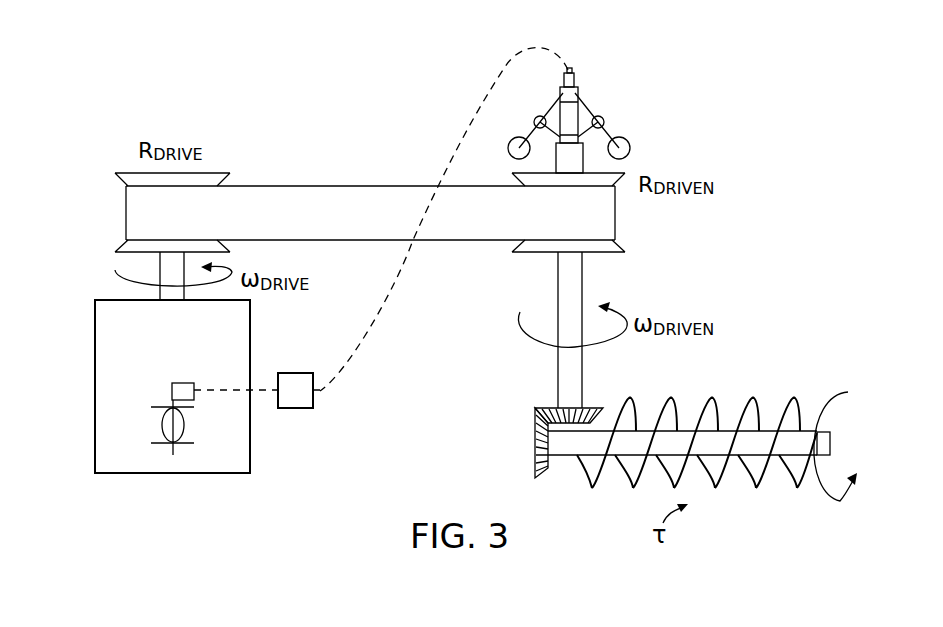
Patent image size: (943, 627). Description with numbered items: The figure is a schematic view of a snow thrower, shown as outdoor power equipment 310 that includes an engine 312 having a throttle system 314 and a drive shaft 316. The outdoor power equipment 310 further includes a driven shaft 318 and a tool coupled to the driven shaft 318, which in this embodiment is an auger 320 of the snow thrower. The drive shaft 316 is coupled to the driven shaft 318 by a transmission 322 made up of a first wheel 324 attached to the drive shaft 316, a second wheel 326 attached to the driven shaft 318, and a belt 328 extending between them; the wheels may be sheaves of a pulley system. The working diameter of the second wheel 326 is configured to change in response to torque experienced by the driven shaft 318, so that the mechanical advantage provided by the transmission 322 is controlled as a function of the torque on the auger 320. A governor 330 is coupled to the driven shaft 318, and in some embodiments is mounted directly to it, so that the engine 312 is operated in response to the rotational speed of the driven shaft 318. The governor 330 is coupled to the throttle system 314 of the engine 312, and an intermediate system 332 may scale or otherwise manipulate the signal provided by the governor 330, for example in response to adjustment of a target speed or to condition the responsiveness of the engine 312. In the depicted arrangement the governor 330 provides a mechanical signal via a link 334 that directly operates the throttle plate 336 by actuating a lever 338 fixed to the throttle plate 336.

The outdoor power equipment 310 is at (308, 94).
The engine 312 is at (115, 355).
The throttle system 314 is at (224, 464).
The drive shaft 316 is at (157, 262).
The driven shaft 318 is at (565, 293).
The auger 320 is at (755, 412).
The transmission 322 is at (138, 178).
The first wheel 324 is at (137, 180).
The second wheel 326 is at (607, 247).
The belt 328 is at (375, 202).
The governor 330 is at (570, 120).
The intermediate system 332 is at (293, 380).
The link 334 is at (490, 80).
The throttle plate 336 is at (178, 425).
The lever 338 is at (172, 390).